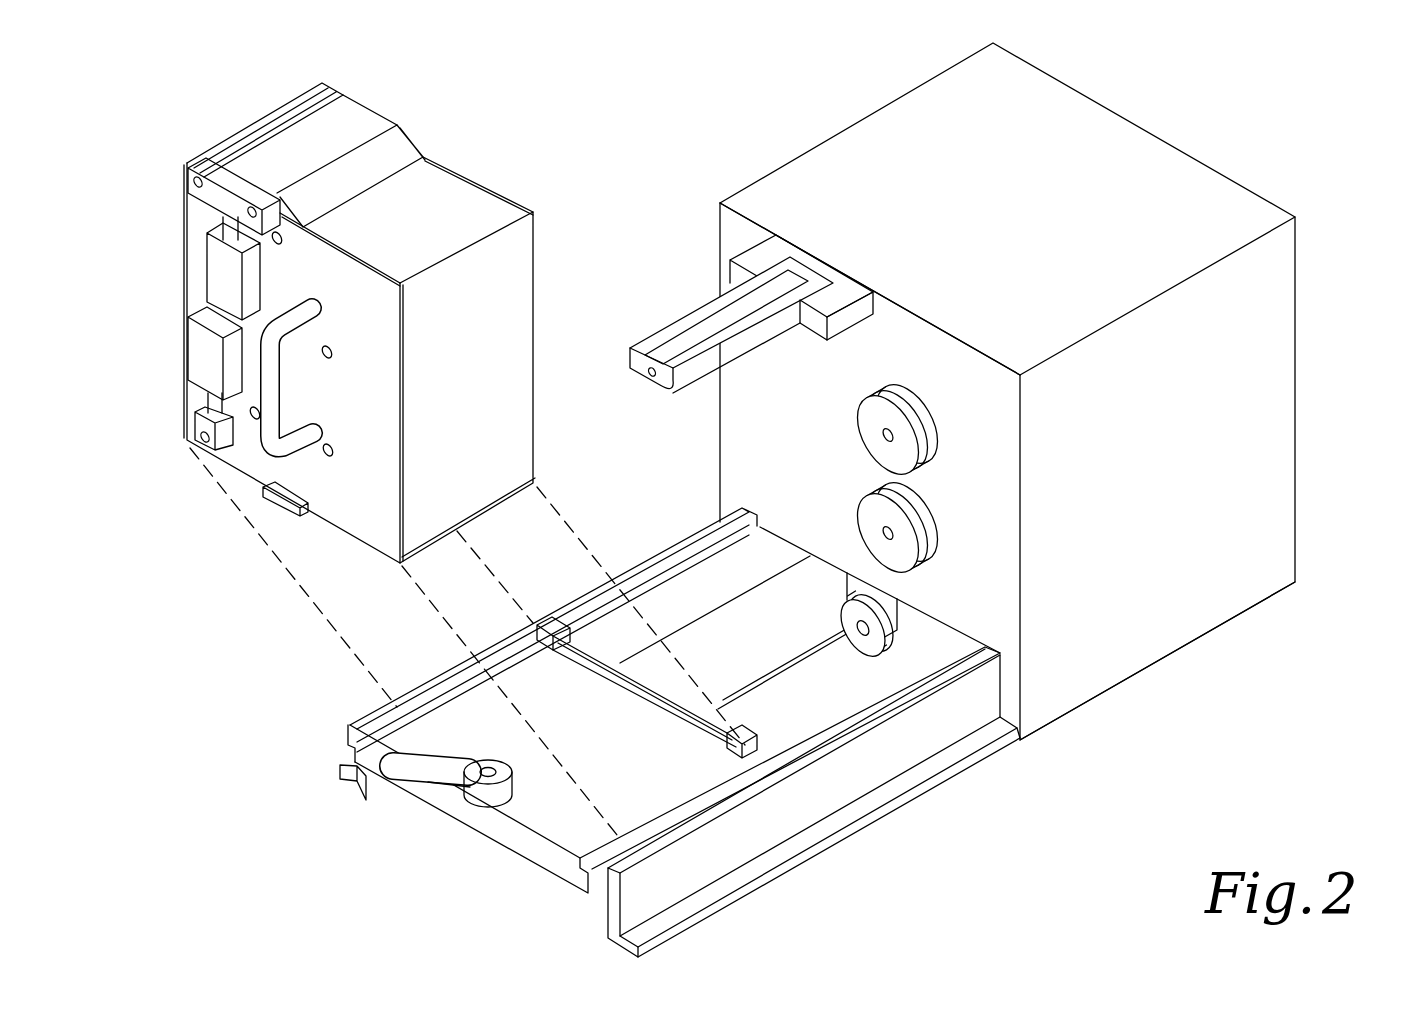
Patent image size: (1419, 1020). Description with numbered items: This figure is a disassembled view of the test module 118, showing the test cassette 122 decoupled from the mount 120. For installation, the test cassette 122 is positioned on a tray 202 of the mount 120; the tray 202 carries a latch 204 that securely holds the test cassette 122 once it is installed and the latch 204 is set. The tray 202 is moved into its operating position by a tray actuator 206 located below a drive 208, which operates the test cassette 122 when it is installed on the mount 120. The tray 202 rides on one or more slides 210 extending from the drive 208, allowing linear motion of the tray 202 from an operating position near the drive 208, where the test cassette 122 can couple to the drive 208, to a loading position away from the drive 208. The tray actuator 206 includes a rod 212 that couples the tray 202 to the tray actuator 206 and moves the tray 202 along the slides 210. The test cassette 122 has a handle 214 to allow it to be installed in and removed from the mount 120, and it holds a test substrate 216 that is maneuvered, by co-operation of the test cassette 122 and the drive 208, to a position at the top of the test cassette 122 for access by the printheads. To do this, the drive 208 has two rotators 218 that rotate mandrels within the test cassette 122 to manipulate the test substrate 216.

The test module 118 is at (1015, 391).
The mount 120 is at (1297, 383).
The test cassette 122 is at (287, 105).
The tray 202 is at (577, 890).
The latch 204 is at (487, 759).
The tray actuator 206 is at (850, 617).
The drive 208 is at (1183, 637).
The slides 210 is at (337, 780).
The rod 212 is at (798, 670).
The handle 214 is at (293, 468).
The test substrate 216 is at (358, 113).
The rotators 218 is at (875, 413).